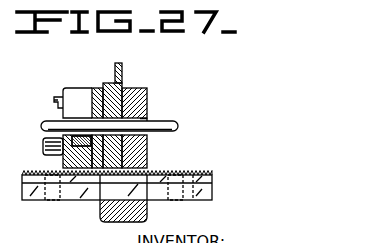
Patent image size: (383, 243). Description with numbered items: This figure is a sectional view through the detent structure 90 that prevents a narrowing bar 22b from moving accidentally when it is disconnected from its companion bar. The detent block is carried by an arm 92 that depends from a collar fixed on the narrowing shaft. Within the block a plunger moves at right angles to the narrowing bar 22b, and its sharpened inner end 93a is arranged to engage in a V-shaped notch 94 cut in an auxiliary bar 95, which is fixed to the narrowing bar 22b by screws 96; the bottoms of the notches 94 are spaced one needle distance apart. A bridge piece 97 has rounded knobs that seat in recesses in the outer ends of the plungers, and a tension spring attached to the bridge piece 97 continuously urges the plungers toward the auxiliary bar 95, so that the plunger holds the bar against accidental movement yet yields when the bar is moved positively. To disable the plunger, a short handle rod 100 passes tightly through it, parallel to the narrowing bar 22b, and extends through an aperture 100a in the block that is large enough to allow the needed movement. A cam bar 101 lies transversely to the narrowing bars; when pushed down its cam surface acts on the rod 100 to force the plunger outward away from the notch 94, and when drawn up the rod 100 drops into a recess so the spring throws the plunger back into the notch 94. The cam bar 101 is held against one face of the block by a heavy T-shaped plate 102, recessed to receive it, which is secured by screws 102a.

The narrowing bar 22b is at (94, 200).
The detent structure 90 is at (95, 89).
The arm 92 is at (117, 212).
The sharpened inner ends 93a is at (110, 166).
The V-shaped notches 94 is at (195, 172).
The auxiliary bar 95 is at (150, 94).
The screws 96 is at (59, 199).
The bridge piece 97 is at (122, 82).
The handle rod 100 is at (182, 127).
The apertures 100a is at (148, 117).
The cam bar 101 is at (58, 141).
The T-shaped plate 102 is at (75, 92).
The screws 102a is at (54, 101).